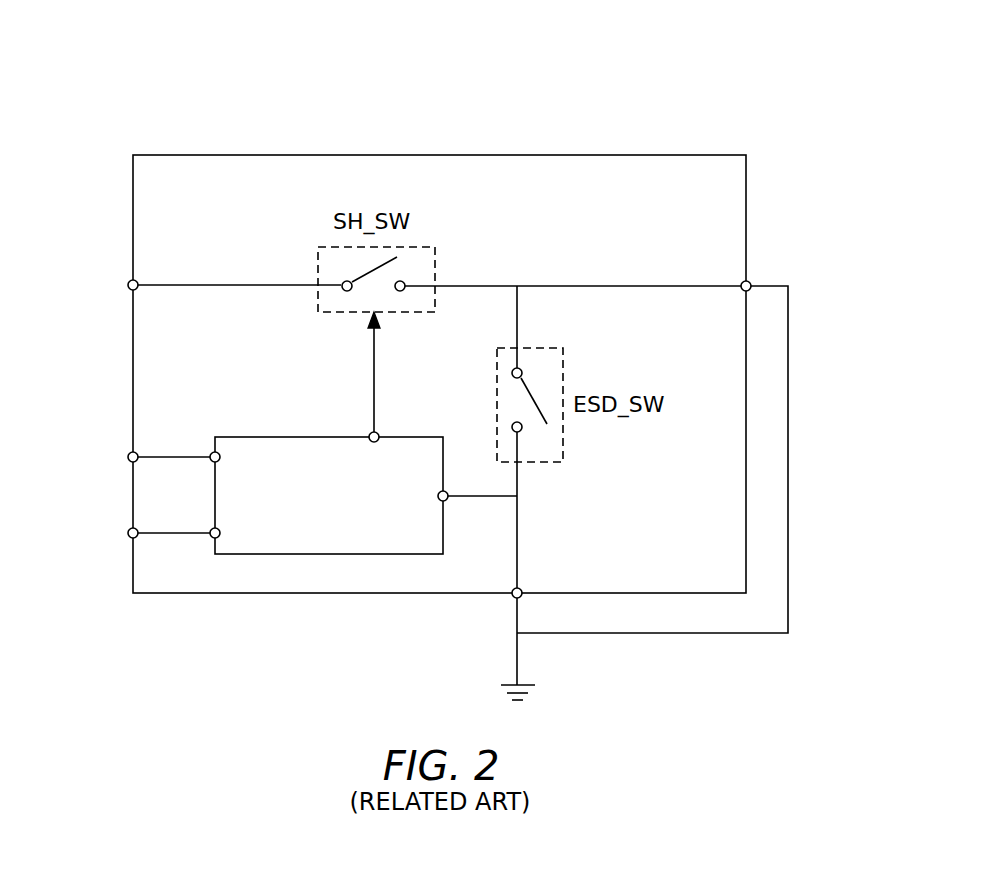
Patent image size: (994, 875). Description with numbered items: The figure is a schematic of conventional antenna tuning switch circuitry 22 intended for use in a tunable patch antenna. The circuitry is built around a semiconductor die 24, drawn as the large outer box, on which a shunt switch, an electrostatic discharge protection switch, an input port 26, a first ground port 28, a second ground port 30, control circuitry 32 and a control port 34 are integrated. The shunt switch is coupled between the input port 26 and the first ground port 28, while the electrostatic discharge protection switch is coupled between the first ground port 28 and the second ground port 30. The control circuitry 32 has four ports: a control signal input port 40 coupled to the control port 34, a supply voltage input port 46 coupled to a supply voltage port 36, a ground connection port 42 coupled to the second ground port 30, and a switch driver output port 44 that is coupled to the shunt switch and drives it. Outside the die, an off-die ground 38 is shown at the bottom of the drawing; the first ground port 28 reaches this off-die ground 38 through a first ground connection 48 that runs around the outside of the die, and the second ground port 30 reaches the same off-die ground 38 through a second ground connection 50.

The antenna tuning switch circuitry 22 is at (457, 82).
The semiconductor die 24 is at (731, 155).
The input port 26 is at (127, 285).
The first ground port 28 is at (749, 280).
The second ground port 30 is at (514, 597).
The control circuitry 32 is at (329, 495).
The control port 34 is at (127, 457).
The supply voltage port 36 is at (127, 533).
The off-die ground 38 is at (535, 690).
The control signal input port 40 is at (211, 452).
The ground connection port 42 is at (446, 501).
The switch driver output port 44 is at (373, 431).
The supply voltage input port 46 is at (211, 537).
The first ground connection 48 is at (788, 457).
The second ground connection 50 is at (516, 650).